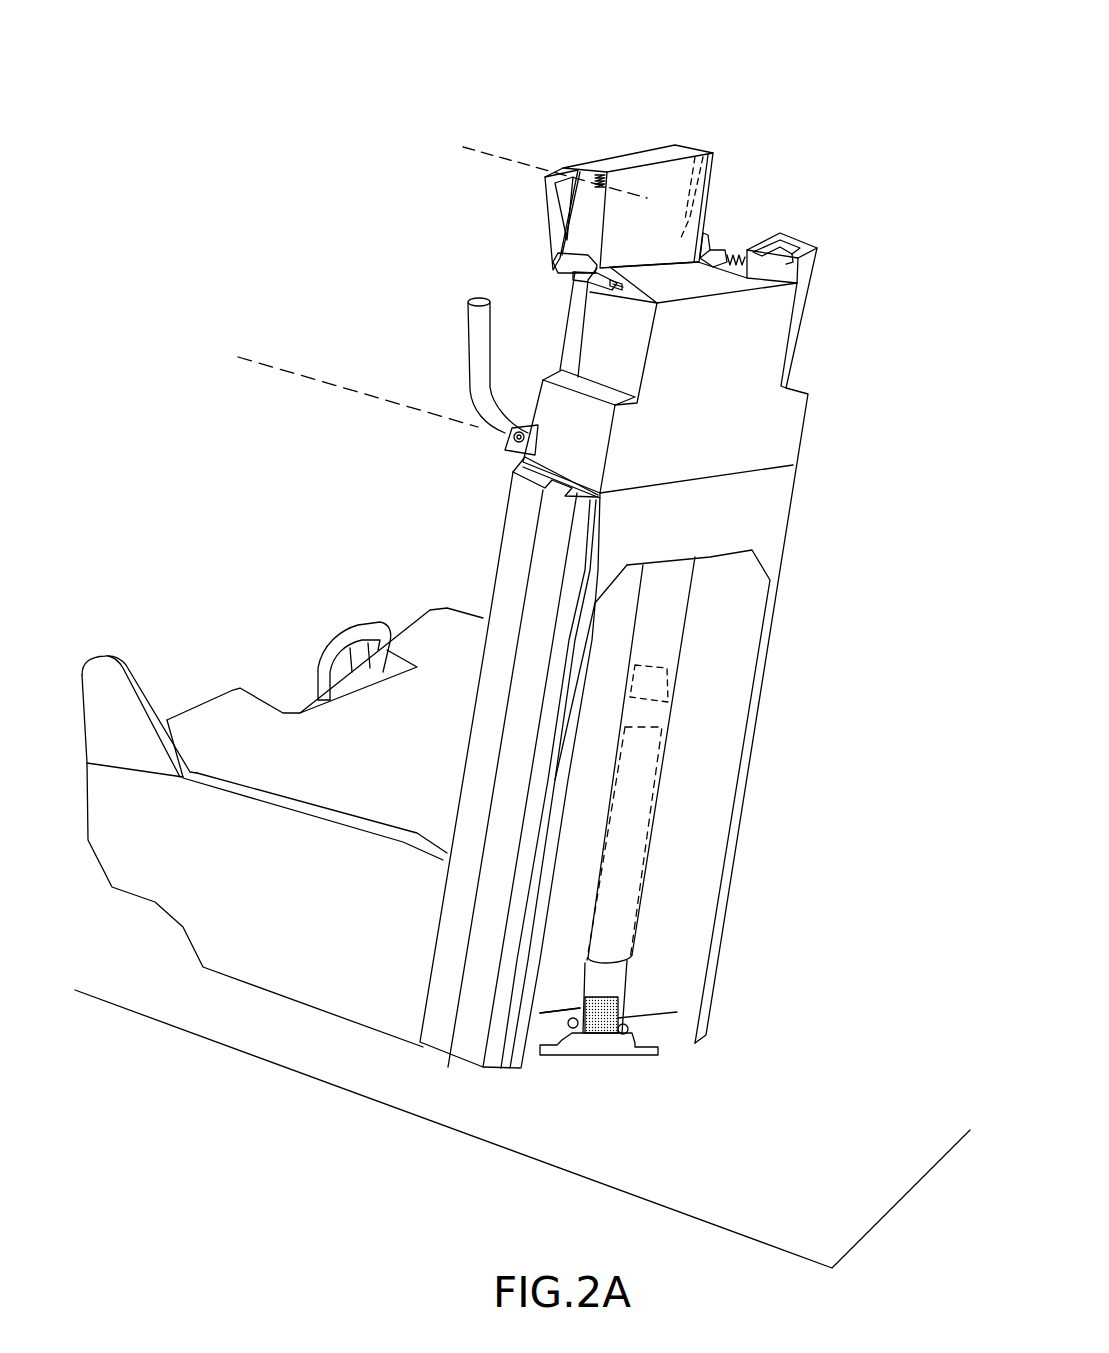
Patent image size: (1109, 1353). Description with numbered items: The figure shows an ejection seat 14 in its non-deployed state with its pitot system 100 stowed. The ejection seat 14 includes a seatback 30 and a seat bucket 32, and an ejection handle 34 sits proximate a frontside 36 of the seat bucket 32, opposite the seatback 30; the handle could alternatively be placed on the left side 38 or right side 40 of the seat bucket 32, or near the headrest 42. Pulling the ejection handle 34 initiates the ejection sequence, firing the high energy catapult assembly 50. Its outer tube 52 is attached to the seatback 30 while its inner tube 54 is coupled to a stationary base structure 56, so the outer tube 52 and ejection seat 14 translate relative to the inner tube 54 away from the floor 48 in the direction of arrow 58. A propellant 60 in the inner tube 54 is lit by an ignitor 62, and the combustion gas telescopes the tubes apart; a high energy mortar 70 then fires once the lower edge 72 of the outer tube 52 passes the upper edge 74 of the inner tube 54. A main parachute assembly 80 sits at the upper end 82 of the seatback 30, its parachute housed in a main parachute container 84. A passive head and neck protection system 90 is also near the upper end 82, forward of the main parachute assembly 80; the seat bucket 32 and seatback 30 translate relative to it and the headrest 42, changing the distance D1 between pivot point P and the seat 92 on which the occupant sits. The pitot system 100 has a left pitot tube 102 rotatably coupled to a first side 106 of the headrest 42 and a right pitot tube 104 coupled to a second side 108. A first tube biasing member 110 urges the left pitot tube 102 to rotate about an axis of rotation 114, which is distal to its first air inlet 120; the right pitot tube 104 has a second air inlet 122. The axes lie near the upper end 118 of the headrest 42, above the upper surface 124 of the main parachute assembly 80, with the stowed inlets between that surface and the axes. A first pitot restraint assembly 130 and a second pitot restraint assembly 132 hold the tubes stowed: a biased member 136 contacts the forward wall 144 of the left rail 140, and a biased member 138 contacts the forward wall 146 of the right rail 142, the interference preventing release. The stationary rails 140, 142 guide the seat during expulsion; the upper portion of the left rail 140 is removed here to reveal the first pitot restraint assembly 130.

The ejection seat 14 is at (822, 80).
The seatback 30 is at (682, 538).
The seat bucket 32 is at (297, 898).
The ejection handle 34 is at (360, 628).
The frontside 36 is at (208, 701).
The left side 38 is at (205, 845).
The right side 40 is at (477, 612).
The headrest 42 is at (622, 243).
The floor 48 is at (762, 1178).
The high energy catapult assembly 50 is at (688, 606).
The outer tube 52 is at (660, 630).
The inner tube 54 is at (612, 978).
The base structure 56 is at (587, 1047).
The arrow 58 is at (879, 378).
The propellant 60 is at (620, 1017).
The ignitor 62 is at (605, 1040).
The high energy mortar 70 is at (650, 683).
The lower edge 72 is at (577, 978).
The upper edge 74 is at (658, 730).
The main parachute assembly 80 is at (763, 358).
The upper end 82 is at (530, 443).
The main parachute container 84 is at (699, 405).
The passive head and neck protection (PHNP) system 90 is at (458, 355).
The seat 92 is at (397, 758).
The pitot system 100 is at (560, 158).
The left pitot tube 102 is at (582, 208).
The right pitot tube 104 is at (697, 193).
The first side 106 is at (562, 160).
The second side 108 is at (743, 147).
The first tube biasing member 110 is at (606, 165).
The axis of rotation 114 is at (468, 148).
The upper end 118 is at (664, 148).
The first air inlet 120 is at (557, 263).
The second air inlet 122 is at (673, 237).
The upper surface 124 is at (673, 283).
The first pitot restraint assembly 130 is at (566, 287).
The second pitot restraint assembly 132 is at (726, 247).
The biased member 136 is at (615, 288).
The biased member 138 is at (740, 272).
The left rail 140 is at (547, 540).
The right rail 142 is at (815, 273).
The forward wall 144 is at (540, 487).
The forward wall 146 is at (757, 242).
The pivot point P is at (522, 430).
The distance D1 is at (236, 750).